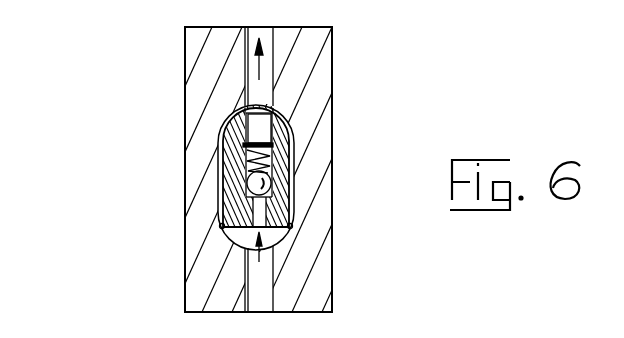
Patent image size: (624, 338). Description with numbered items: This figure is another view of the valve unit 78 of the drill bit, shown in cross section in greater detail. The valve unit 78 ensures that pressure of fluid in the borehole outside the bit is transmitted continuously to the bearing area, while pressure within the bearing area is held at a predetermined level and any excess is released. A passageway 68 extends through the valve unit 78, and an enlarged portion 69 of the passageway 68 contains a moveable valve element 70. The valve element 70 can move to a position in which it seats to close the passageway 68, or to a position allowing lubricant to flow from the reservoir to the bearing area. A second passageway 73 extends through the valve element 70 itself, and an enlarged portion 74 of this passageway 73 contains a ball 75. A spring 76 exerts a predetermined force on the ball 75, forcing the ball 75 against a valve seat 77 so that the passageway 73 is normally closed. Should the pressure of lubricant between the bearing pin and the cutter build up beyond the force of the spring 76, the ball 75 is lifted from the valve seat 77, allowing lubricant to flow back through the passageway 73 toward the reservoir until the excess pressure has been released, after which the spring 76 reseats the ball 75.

The passageway 68 is at (250, 81).
The enlarged portion of the passageway 69 is at (290, 225).
The moveable valve element 70 is at (232, 133).
The passageway 73 is at (263, 125).
The enlarged portion of the passageway 74 is at (272, 165).
The ball 75 is at (268, 184).
The spring 76 is at (244, 150).
The valve seat 77 is at (251, 192).
The valve unit 78 is at (136, 163).